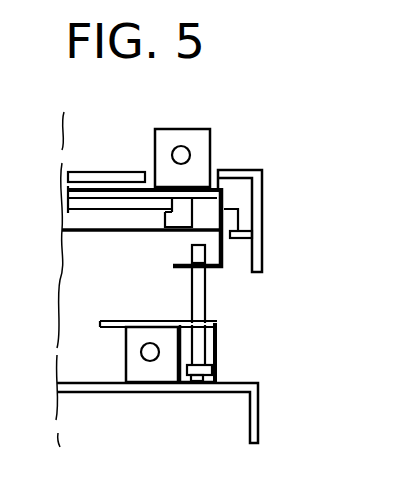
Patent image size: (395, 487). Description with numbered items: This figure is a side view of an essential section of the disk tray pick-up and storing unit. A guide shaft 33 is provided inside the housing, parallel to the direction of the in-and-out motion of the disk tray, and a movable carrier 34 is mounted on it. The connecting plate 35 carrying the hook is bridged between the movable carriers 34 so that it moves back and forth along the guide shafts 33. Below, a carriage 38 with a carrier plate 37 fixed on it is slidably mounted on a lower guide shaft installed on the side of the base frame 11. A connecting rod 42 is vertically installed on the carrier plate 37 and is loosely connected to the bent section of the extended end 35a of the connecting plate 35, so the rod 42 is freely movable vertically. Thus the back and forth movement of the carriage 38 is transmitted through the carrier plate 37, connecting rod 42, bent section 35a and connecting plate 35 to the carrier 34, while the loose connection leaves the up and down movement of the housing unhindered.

The base frame 11 is at (258, 413).
The guide shaft 33 is at (181, 155).
The movable carrier 34 is at (211, 138).
The connecting plate 35 is at (100, 190).
The bent section of extended end 35a is at (173, 263).
The carrier plate 37 is at (218, 341).
The carriage 38 is at (157, 370).
The connecting rod 42 is at (206, 292).